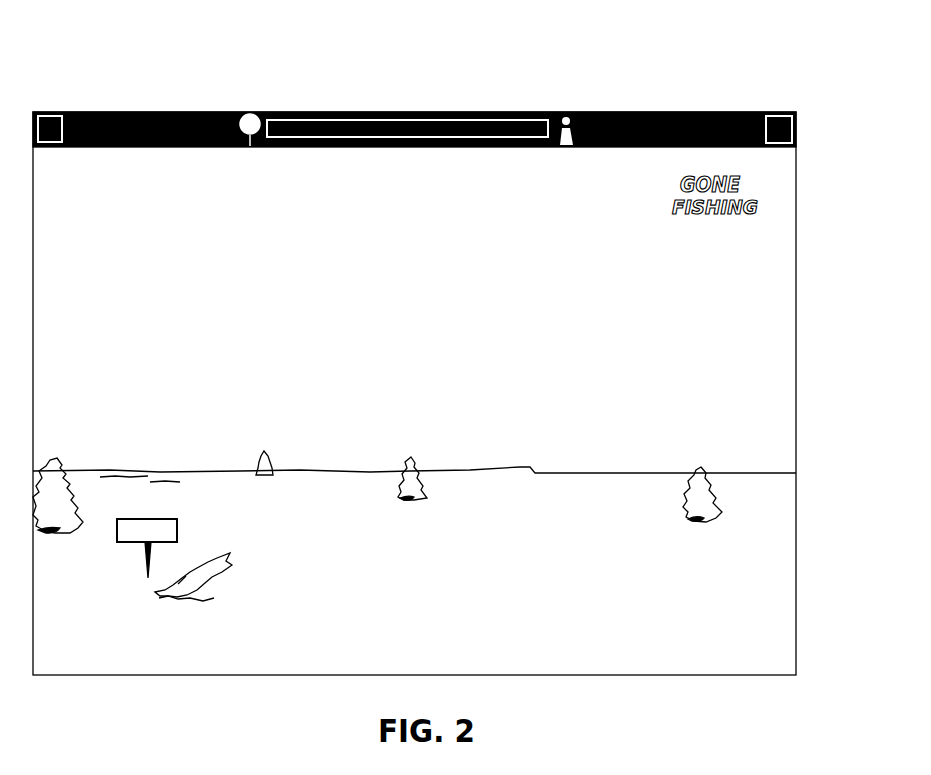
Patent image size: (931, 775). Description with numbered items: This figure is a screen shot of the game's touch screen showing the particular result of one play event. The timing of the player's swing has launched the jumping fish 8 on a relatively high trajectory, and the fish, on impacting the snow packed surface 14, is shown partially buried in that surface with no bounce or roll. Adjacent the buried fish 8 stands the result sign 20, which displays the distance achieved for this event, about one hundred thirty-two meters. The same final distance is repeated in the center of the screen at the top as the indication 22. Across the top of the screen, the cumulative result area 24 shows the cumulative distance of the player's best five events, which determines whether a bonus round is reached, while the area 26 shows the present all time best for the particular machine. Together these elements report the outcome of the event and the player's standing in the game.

The jumping fish 8 is at (248, 596).
The snow packed surface 14 is at (543, 596).
The result sign 20 is at (108, 563).
The final distance indication 22 is at (457, 200).
The cumulative result area 24 is at (749, 111).
The all time best area 26 is at (414, 161).